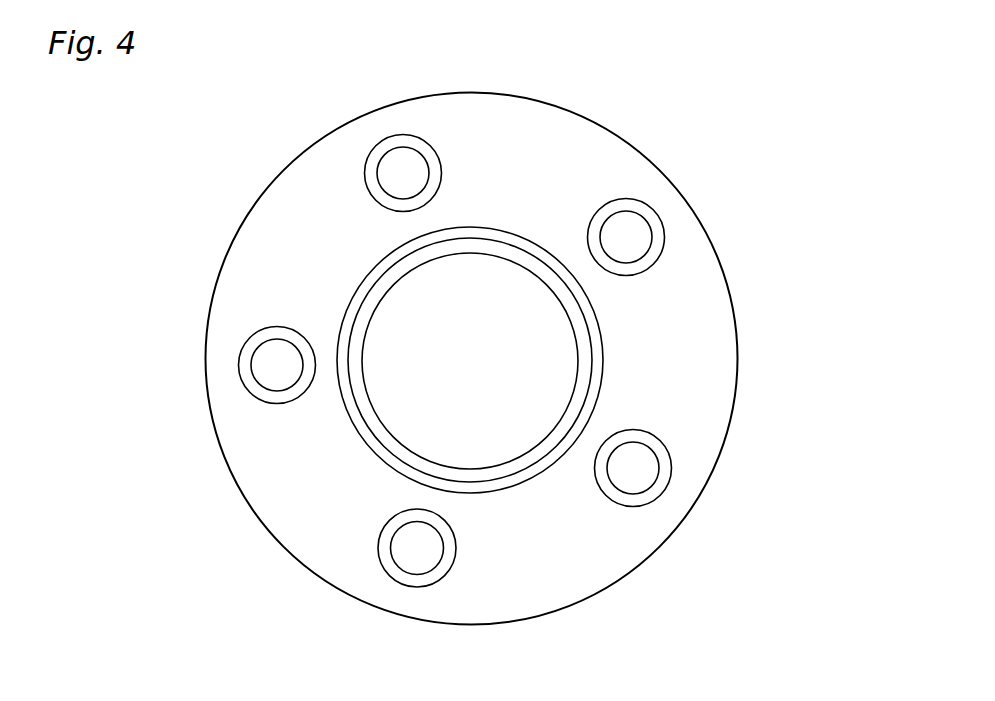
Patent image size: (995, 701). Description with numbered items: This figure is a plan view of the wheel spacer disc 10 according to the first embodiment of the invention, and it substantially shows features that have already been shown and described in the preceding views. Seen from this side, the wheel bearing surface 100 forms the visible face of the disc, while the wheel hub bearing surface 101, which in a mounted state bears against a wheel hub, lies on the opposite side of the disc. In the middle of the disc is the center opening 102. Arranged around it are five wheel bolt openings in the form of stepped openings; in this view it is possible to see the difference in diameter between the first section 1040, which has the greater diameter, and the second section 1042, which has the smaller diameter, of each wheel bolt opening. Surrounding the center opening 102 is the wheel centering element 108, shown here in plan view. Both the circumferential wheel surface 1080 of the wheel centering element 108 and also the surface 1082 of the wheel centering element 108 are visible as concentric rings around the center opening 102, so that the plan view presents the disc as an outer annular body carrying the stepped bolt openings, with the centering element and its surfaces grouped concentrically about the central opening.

The wheel spacer disc 10 is at (735, 88).
The wheel bearing surface 100 is at (713, 360).
The wheel hub bearing surface 101 is at (258, 365).
The center opening 102 is at (474, 266).
The wheel centering element 108 is at (504, 514).
The first section 1040 is at (618, 212).
The second section 1042 is at (631, 454).
The circumferential wheel surface 1080 is at (372, 259).
The surface 1082 is at (355, 308).